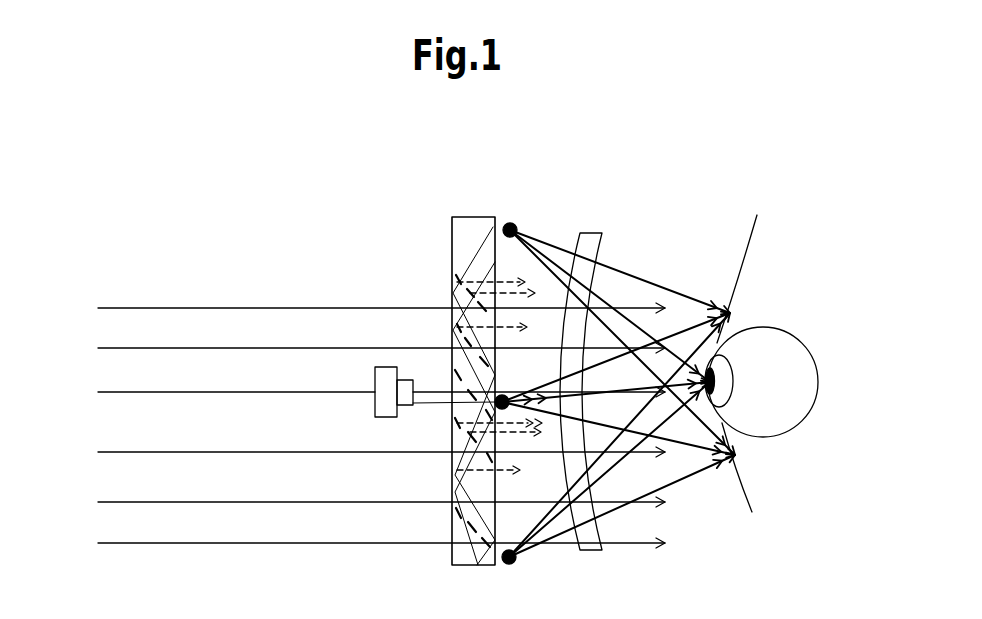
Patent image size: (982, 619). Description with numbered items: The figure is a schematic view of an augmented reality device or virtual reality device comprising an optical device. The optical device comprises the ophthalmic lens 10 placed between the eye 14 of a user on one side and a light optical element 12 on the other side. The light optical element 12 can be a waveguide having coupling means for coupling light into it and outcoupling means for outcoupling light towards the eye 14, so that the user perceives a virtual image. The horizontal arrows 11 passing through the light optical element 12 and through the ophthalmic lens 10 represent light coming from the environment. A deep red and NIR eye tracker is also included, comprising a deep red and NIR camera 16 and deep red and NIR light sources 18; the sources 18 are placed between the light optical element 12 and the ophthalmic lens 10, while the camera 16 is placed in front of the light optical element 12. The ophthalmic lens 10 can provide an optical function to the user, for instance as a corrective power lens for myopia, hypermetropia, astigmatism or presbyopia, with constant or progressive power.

The ophthalmic lens 10 is at (597, 245).
The horizontal arrows 11 is at (204, 308).
The light optical element 12 is at (474, 217).
The eye 14 is at (766, 328).
The deep red and NIR camera 16 is at (387, 372).
The deep red and NIR light source 18 is at (509, 224).